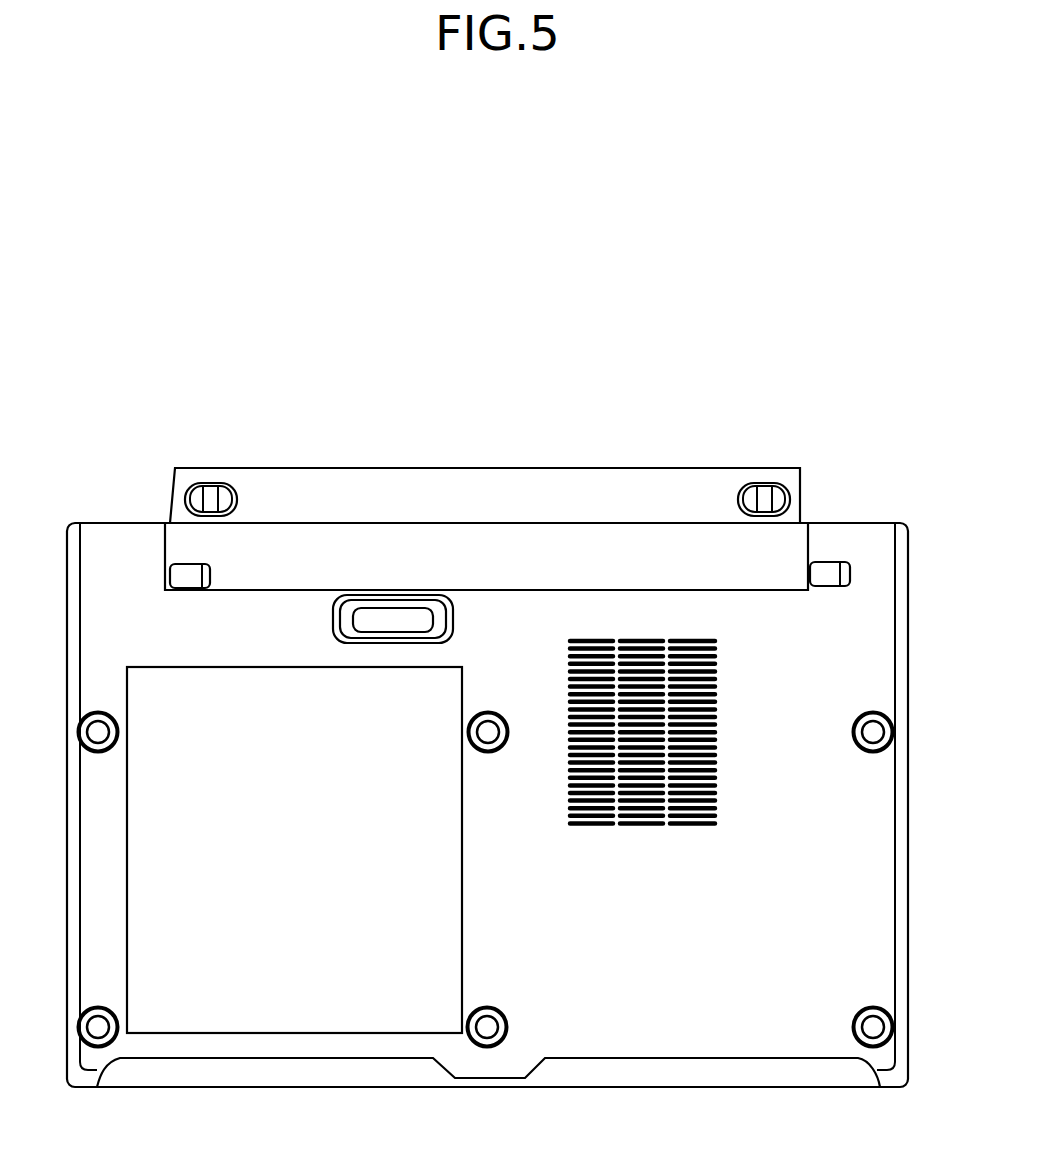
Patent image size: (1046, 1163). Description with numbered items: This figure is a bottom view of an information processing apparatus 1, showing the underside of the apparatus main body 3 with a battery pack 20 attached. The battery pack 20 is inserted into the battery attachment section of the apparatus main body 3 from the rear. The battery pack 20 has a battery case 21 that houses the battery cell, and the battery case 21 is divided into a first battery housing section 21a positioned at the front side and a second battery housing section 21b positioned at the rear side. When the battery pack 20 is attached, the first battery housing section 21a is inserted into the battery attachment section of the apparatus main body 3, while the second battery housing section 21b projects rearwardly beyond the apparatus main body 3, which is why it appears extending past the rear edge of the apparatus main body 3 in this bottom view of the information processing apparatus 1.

The information processing apparatus 1 is at (792, 220).
The apparatus main body 3 is at (833, 530).
The battery pack 20 is at (480, 483).
The battery case 21 is at (571, 483).
The first battery housing section 21a is at (280, 540).
The second battery housing section 21b is at (382, 483).